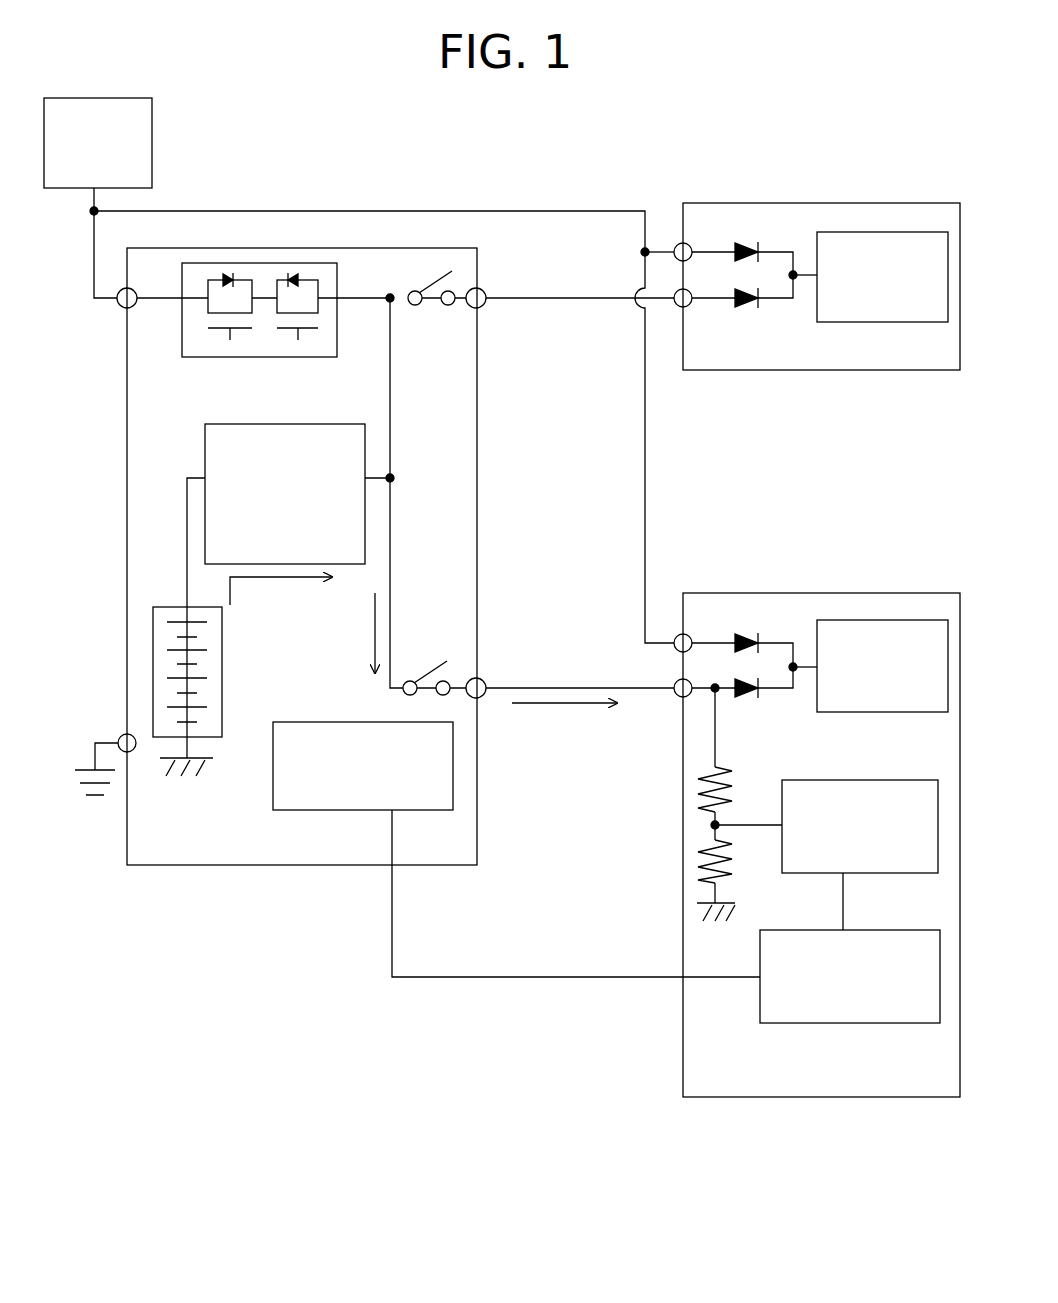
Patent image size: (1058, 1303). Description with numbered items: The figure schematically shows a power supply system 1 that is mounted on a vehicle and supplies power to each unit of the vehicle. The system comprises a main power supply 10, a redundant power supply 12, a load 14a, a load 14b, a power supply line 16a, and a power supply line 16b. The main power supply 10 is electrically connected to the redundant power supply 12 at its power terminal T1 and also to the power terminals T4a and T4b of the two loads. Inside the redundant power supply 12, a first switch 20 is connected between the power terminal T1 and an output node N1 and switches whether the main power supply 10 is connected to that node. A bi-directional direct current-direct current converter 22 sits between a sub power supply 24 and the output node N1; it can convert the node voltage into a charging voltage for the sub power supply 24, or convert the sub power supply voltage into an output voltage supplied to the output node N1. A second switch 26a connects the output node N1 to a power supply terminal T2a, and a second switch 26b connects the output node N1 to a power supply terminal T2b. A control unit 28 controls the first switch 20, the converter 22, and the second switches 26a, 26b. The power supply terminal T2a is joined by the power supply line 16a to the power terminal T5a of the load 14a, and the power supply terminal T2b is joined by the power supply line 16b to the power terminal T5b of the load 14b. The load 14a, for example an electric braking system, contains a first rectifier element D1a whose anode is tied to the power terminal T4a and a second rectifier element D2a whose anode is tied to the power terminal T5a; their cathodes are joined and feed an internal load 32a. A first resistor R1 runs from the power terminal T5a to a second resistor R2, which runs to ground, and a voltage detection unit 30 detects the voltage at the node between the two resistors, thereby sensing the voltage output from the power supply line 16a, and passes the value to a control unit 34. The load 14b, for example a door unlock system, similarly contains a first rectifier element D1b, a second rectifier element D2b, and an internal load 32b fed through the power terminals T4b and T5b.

The power supply system 1 is at (472, 1118).
The main power supply 10 is at (153, 138).
The redundant power supply 12 is at (293, 867).
The load 14a is at (792, 861).
The load 14b is at (800, 303).
The power supply line 16a is at (580, 685).
The power supply line 16b is at (578, 300).
The first switch 20 is at (193, 357).
The direct current-direct current converter 22 is at (277, 424).
The sub power supply 24 is at (153, 635).
The second switch 26a is at (425, 660).
The second switch 26b is at (430, 303).
The control unit 28 is at (455, 772).
The voltage detection unit 30 is at (841, 780).
The internal load 32a is at (862, 620).
The internal load 32b is at (862, 232).
The control unit 34 is at (760, 1008).
The power terminal T1 is at (133, 315).
The power supply terminal T2a is at (499, 674).
The power supply terminal T2b is at (499, 283).
The power terminal T4a is at (680, 634).
The power terminal T4b is at (680, 243).
The power terminal T5a is at (676, 697).
The power terminal T5b is at (690, 307).
The output node N1 is at (413, 491).
The first rectifier element D1a is at (750, 626).
The first rectifier element D1b is at (750, 236).
The second rectifier element D2a is at (750, 705).
The second rectifier element D2b is at (750, 315).
The first resistor R1 is at (735, 789).
The second resistor R2 is at (735, 861).